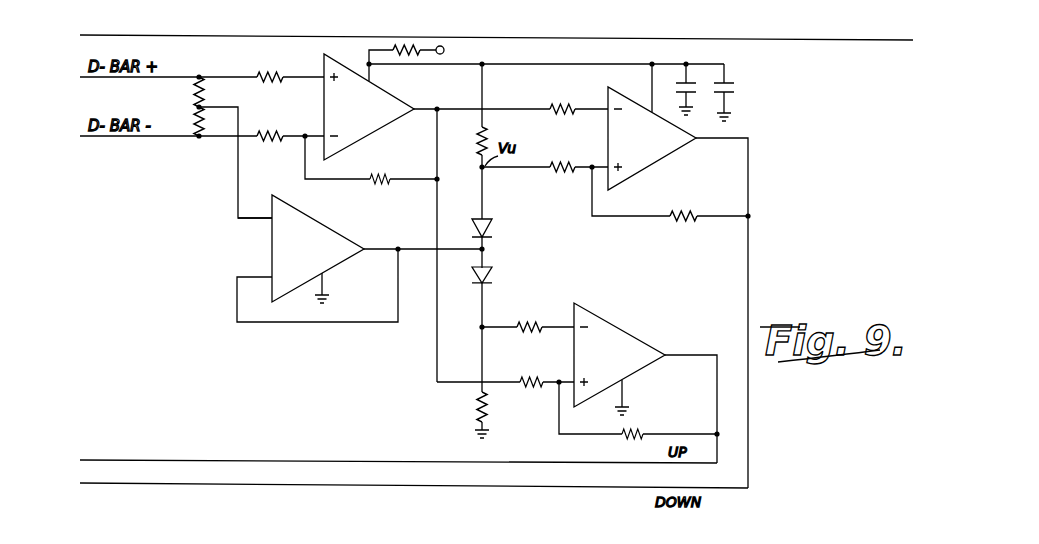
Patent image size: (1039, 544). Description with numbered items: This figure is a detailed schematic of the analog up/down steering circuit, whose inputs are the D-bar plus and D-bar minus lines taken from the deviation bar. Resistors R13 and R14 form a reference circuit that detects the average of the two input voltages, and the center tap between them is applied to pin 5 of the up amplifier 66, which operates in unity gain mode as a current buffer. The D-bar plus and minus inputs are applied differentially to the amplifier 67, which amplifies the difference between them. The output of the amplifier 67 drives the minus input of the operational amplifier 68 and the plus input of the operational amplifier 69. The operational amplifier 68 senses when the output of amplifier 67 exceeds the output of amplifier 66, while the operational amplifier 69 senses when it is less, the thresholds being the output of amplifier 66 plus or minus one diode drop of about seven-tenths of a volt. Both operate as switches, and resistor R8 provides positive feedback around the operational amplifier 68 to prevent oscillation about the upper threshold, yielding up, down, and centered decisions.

The pin 5 is at (255, 211).
The up amplifier 66 is at (308, 260).
The amplifier 67 is at (362, 117).
The operational amplifier 68 is at (648, 146).
The operational amplifier 69 is at (610, 364).
The resistor R8 is at (684, 220).
The resistor R13 is at (203, 96).
The resistor R14 is at (197, 125).